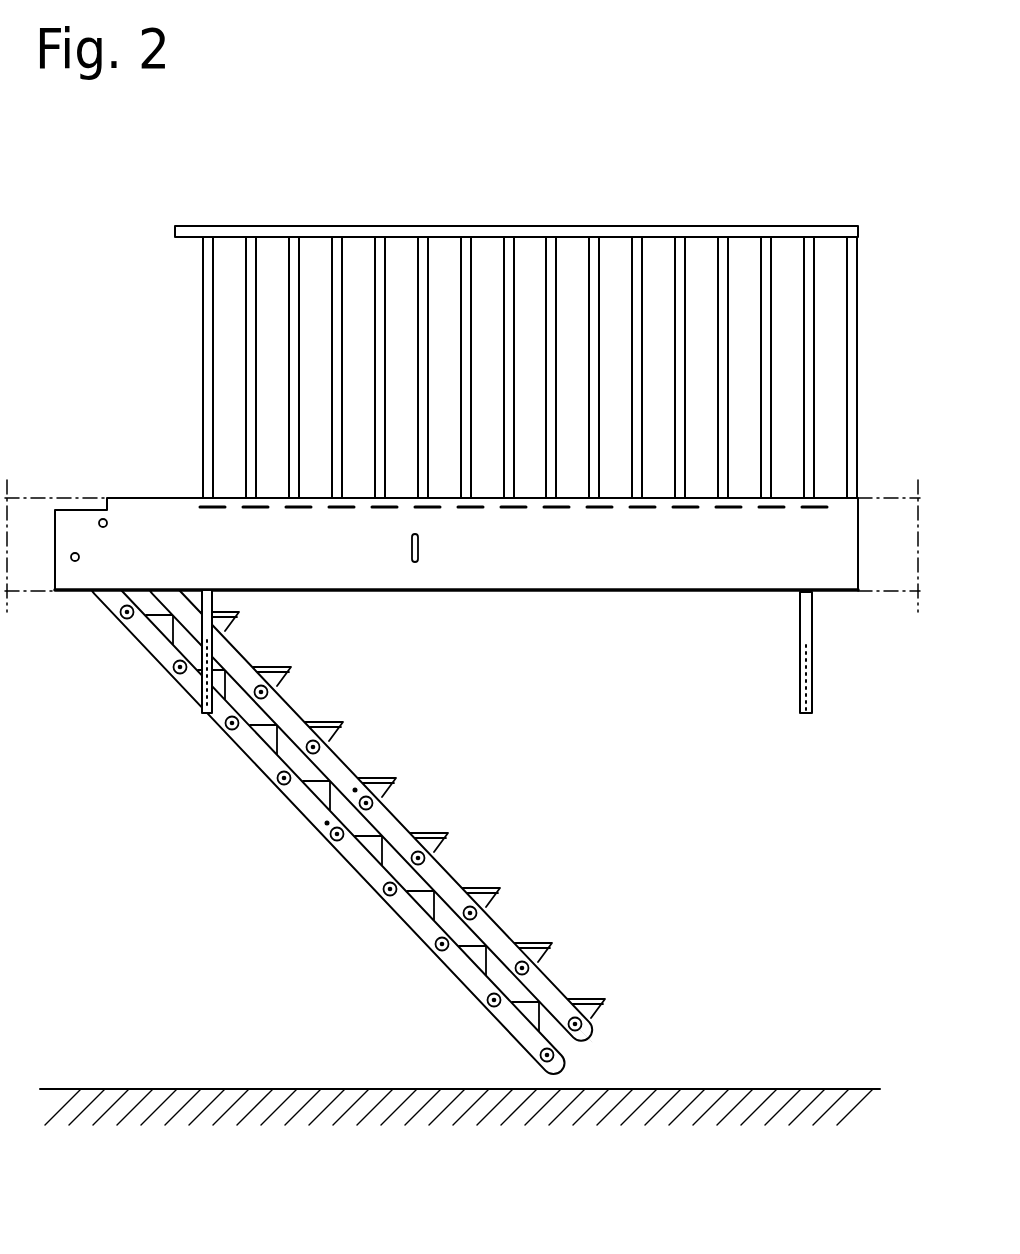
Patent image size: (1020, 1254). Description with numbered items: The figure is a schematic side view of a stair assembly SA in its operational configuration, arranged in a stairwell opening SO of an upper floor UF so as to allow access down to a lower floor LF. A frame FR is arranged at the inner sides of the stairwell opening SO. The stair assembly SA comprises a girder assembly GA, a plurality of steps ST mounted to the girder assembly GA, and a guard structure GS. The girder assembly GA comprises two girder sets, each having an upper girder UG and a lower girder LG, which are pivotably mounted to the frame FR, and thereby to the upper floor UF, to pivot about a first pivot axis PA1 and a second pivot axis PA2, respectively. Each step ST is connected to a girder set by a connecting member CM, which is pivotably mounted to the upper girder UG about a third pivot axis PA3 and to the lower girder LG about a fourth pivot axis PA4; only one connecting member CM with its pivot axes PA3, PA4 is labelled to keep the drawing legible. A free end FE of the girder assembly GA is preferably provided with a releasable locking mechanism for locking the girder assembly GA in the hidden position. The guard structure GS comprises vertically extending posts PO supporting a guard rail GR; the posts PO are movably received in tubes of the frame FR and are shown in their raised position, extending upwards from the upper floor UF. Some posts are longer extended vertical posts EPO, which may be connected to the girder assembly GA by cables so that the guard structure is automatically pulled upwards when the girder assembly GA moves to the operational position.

The stair assembly SA is at (467, 615).
The guard rail GR is at (313, 237).
The guard structure GS is at (562, 236).
The vertically extending posts PO is at (297, 381).
The first pivot axis PA1 is at (107, 523).
The second pivot axis PA2 is at (73, 560).
The third pivot axis PA3 is at (362, 800).
The fourth pivot axis PA4 is at (343, 850).
The upper floor UF is at (898, 512).
The lower floor LF is at (800, 1090).
The frame FR is at (672, 558).
The stairwell opening SO is at (545, 605).
The extended vertical posts EPO is at (200, 697).
The steps ST is at (238, 611).
The girder assembly GA is at (419, 824).
The lower girder LG is at (463, 966).
The upper girder UG is at (495, 908).
The connecting member CM is at (362, 860).
The free end FE is at (635, 1028).